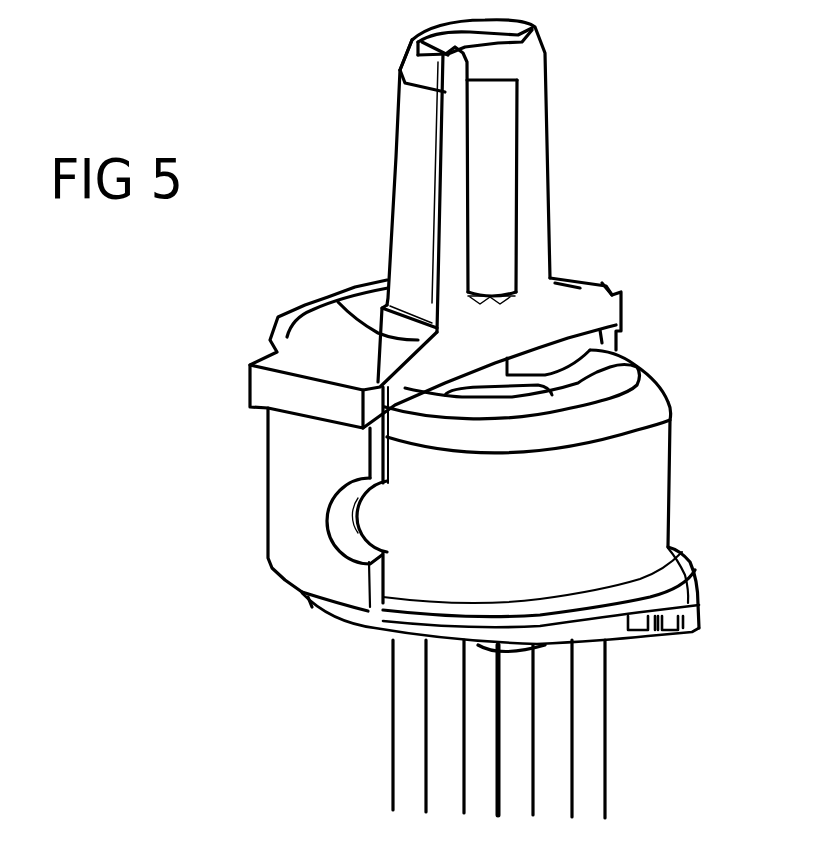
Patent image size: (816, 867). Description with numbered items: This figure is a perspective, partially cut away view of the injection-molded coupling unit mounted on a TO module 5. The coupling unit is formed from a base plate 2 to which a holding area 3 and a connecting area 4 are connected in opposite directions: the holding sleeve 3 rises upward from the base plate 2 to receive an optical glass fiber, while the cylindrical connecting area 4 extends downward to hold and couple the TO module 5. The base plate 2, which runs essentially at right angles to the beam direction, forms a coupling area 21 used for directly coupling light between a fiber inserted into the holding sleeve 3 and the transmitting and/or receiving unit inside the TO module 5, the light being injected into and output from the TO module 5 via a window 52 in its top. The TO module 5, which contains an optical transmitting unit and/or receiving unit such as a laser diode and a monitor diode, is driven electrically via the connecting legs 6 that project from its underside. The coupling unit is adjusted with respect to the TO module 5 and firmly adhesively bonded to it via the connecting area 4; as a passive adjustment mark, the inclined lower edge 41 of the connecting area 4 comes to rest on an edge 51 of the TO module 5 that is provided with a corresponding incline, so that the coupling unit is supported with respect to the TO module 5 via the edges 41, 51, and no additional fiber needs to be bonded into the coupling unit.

The base plate 2 is at (422, 362).
The coupling area 21 is at (500, 340).
The holding area 3 is at (530, 153).
The connecting area 4 is at (565, 303).
The TO module 5 is at (633, 472).
The edge of the TO module 51 is at (663, 580).
The window 52 is at (552, 392).
The inclined lower edge 41 is at (380, 613).
The connecting legs 6 is at (608, 722).